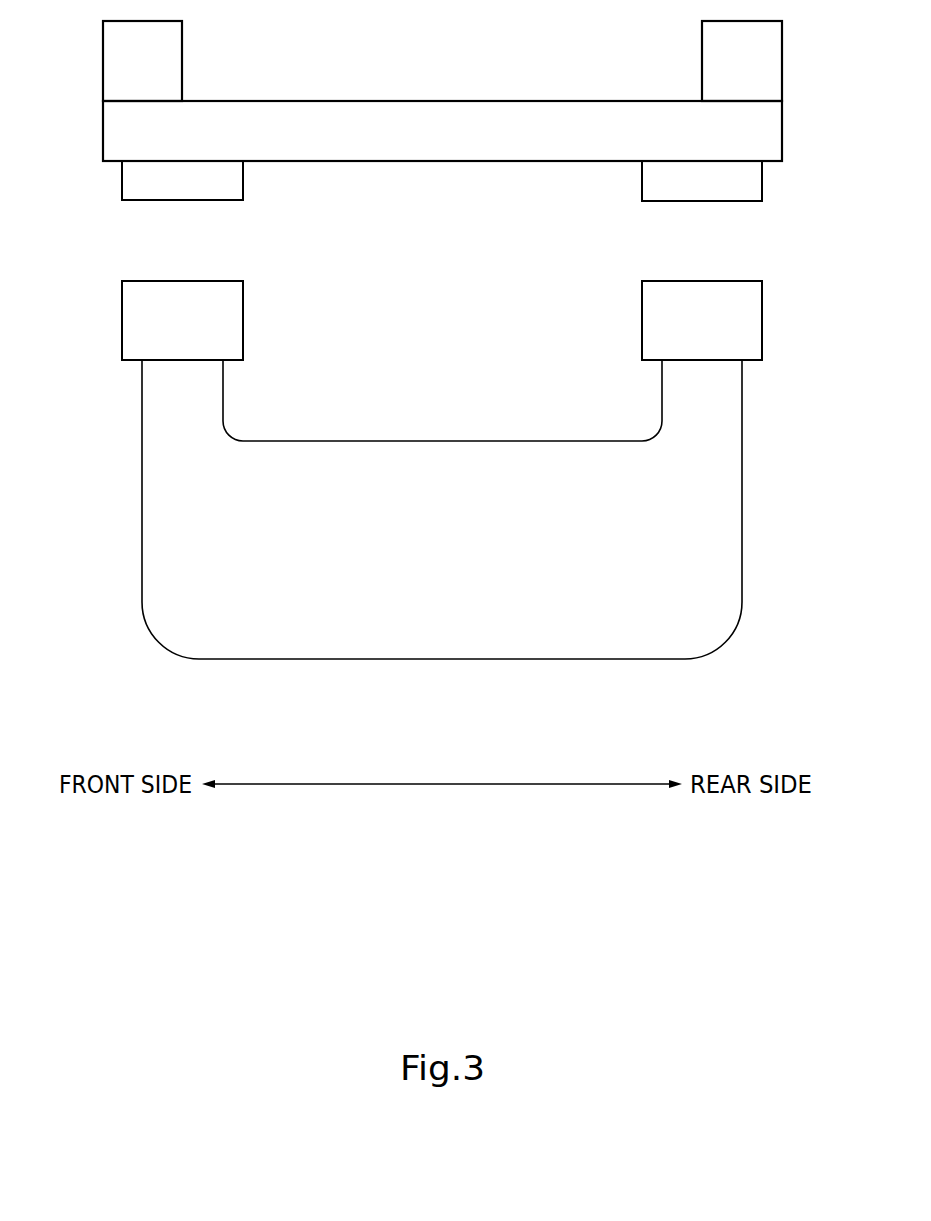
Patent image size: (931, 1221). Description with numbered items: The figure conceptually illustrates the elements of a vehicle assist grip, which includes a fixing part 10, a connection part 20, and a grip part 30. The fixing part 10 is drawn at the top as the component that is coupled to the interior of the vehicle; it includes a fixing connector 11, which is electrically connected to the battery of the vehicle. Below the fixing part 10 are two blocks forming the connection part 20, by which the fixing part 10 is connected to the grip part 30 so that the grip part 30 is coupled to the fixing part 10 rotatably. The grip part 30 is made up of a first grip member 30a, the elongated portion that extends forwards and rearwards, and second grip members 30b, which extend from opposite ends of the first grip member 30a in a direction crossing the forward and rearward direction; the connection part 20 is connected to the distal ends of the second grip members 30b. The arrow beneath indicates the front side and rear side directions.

The fixing part 10 is at (449, 81).
The fixing connector 11 is at (703, 181).
The connection part 20 is at (613, 320).
The grip part 30 is at (442, 547).
The first grip member 30a is at (481, 624).
The second grip members 30b is at (688, 387).